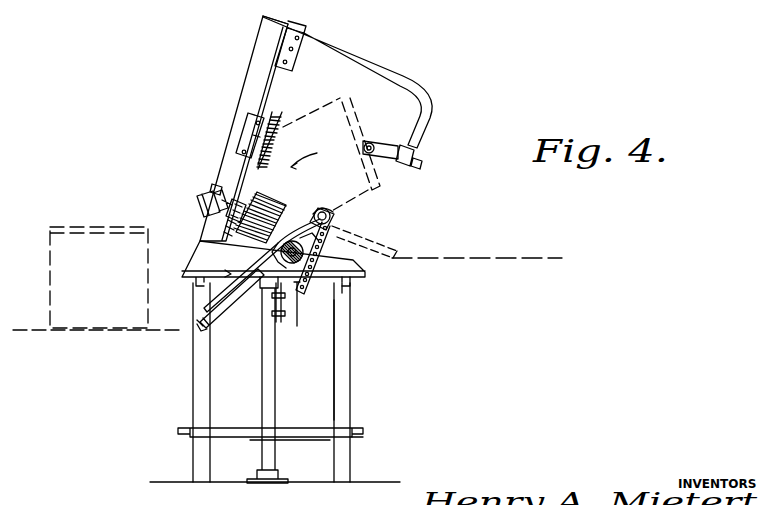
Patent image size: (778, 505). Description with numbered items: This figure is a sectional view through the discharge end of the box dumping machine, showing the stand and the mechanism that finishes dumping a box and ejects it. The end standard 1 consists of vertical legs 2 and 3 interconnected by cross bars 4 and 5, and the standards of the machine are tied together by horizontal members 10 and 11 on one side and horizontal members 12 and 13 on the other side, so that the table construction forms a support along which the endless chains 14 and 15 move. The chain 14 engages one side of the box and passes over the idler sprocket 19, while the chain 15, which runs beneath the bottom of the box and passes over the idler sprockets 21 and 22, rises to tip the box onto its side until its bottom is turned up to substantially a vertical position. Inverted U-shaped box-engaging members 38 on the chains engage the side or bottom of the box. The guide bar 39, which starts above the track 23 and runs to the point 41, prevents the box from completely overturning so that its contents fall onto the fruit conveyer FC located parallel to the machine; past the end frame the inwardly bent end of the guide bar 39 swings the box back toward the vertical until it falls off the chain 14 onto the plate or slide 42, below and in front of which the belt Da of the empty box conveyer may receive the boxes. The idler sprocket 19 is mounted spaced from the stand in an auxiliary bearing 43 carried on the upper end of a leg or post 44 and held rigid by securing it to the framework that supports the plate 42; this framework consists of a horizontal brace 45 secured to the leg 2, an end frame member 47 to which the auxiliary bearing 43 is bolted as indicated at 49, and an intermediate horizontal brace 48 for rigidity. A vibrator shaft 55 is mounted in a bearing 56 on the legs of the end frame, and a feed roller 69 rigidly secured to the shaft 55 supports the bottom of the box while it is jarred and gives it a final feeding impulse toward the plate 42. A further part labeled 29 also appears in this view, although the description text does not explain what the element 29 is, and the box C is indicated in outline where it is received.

The end standard 1 is at (353, 393).
The vertical leg 2 is at (193, 398).
The vertical leg 3 is at (334, 375).
The cross bar 4 is at (303, 439).
The cross bar 5 is at (342, 284).
The horizontal member 10 is at (187, 279).
The horizontal member 11 is at (184, 435).
The horizontal member 12 is at (367, 282).
The horizontal member 13 is at (365, 432).
The endless chain 14 is at (338, 222).
The endless chain 15 is at (256, 198).
The idler sprocket 19 is at (302, 296).
The idler sprocket 21 is at (262, 96).
The idler sprocket 22 is at (226, 232).
The track 23 is at (336, 233).
The mounting plate 29 is at (270, 64).
The box-engaging member 38 is at (328, 207).
The guide bar 39 is at (394, 158).
The point of guide bar 41 is at (401, 144).
The plate or slide 42 is at (226, 273).
The auxiliary bearing 43 is at (298, 325).
The leg or post 44 is at (263, 366).
The horizontal brace 45 is at (204, 326).
The end frame member 47 is at (229, 311).
The intermediate horizontal brace 48 is at (273, 291).
The bolting 49 is at (276, 252).
The vibrator shaft 55 is at (198, 200).
The bearing 56 is at (214, 185).
The feed roller 69 is at (286, 206).
The container C is at (82, 240).
The belt Da is at (28, 333).
The fruit conveyer FC is at (517, 260).